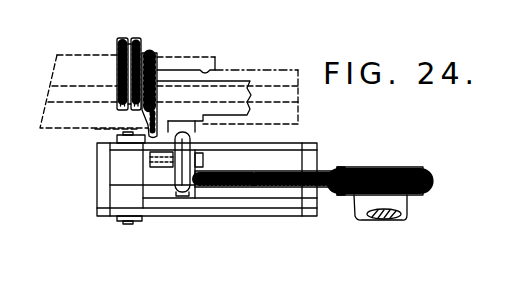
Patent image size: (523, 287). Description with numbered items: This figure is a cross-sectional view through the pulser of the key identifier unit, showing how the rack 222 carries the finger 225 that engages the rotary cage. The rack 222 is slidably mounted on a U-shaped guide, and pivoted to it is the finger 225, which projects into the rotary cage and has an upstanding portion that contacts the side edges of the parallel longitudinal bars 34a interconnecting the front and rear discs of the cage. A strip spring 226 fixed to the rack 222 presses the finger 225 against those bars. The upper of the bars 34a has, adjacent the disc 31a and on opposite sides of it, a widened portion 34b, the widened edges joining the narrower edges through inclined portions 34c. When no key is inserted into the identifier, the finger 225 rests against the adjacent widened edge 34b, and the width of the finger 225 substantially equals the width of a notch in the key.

The disc 31a is at (125, 38).
The parallel longitudinal bars 34a is at (240, 82).
The widened portion 34b is at (168, 117).
The inclined portions 34c is at (212, 70).
The rack 222 is at (317, 172).
The finger 225 is at (178, 133).
The strip spring 226 is at (186, 150).